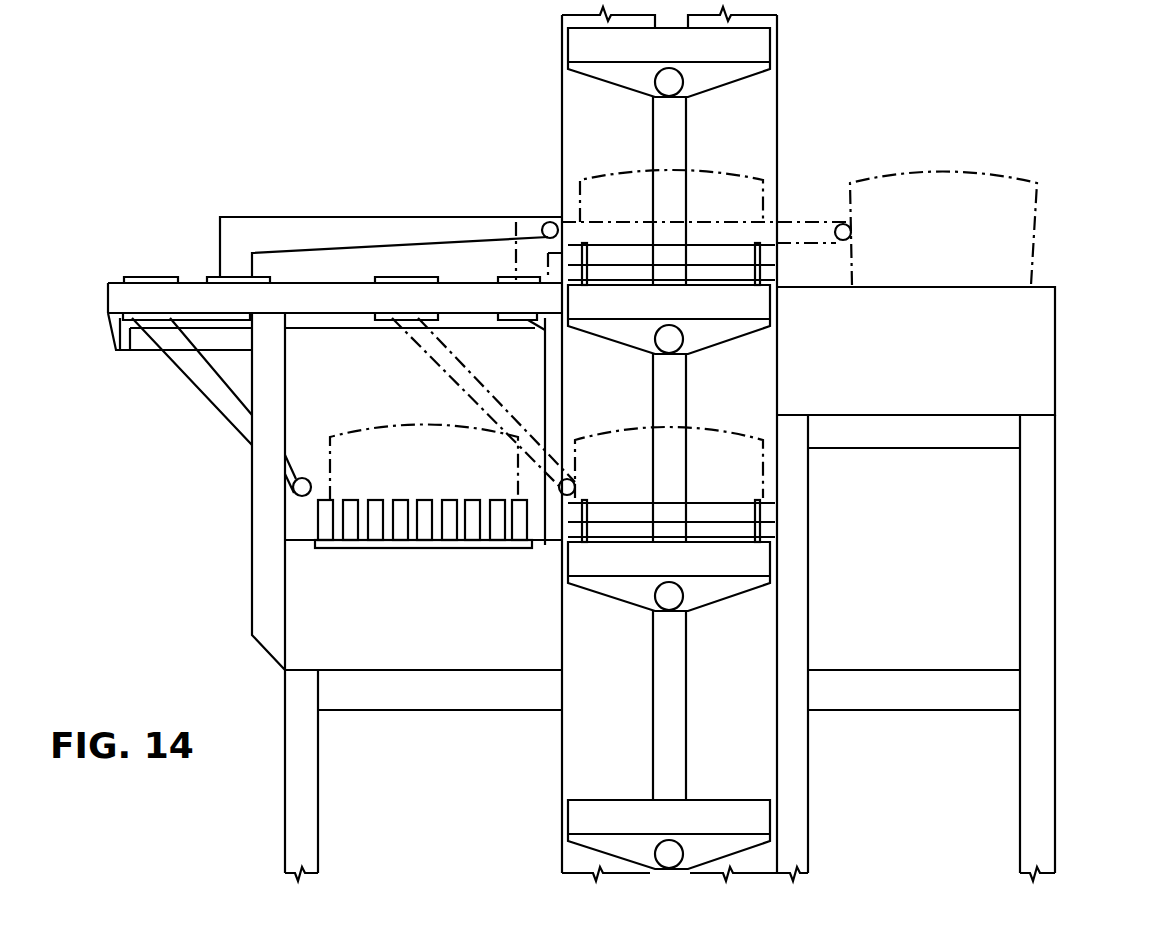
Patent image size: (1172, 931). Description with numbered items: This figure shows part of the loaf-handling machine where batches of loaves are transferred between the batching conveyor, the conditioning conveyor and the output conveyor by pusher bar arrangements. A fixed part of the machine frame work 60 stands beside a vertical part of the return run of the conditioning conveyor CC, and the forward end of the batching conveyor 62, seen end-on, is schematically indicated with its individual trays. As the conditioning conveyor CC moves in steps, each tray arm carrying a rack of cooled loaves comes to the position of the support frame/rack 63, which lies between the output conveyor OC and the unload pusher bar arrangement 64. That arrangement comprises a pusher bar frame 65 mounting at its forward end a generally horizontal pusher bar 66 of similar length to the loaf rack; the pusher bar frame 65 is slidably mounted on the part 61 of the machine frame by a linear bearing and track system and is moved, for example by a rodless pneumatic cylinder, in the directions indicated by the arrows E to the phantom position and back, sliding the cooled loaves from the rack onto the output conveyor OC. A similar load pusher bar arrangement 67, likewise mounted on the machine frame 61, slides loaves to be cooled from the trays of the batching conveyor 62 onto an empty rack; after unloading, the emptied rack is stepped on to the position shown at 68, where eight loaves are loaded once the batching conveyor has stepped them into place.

The fixed part of the machine frame work 60 is at (268, 530).
The part of the machine frame 61 is at (123, 297).
The forward end of the batching conveyor 62 is at (425, 540).
The support frame/rack 63 is at (705, 322).
The unload pusher bar arrangement 64 is at (341, 213).
The pusher bar frame 65 is at (428, 233).
The pusher bar 66 is at (547, 222).
The load pusher bar arrangement 67 is at (197, 400).
The emptied rack support position and rack 68 is at (700, 588).
The conditioning conveyor CC is at (797, 118).
The output conveyor OC is at (1043, 278).
The arrows indicating pusher bar movement E is at (445, 117).